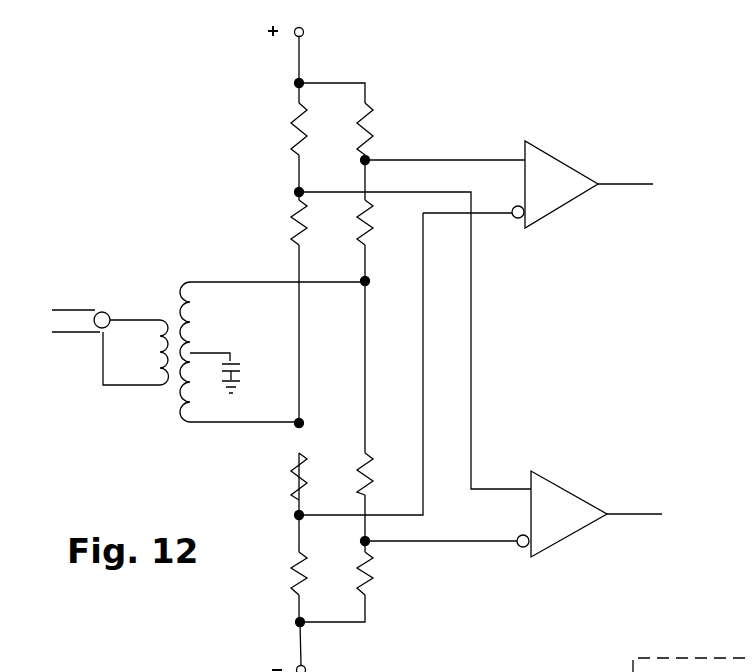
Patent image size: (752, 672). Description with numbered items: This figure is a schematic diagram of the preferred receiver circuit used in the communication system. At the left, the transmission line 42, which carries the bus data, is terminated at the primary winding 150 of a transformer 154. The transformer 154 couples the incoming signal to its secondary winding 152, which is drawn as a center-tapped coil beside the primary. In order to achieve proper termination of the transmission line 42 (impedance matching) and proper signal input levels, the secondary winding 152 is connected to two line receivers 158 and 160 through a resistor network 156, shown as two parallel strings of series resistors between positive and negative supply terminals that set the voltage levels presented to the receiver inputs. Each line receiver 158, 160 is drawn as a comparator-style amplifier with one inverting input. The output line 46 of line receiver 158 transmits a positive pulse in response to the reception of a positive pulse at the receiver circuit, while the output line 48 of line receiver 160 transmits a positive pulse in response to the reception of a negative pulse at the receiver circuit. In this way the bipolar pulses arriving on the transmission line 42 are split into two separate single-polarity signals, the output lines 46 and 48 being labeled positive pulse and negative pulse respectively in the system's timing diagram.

The transmission line 42 is at (77, 332).
The primary winding 150 is at (160, 317).
The secondary winding 152 is at (183, 405).
The transformer 154 is at (181, 273).
The resistor network 156 is at (387, 123).
The line receiver 158 is at (572, 205).
The line receiver 160 is at (578, 533).
The output line 46 is at (623, 184).
The output line 48 is at (632, 514).